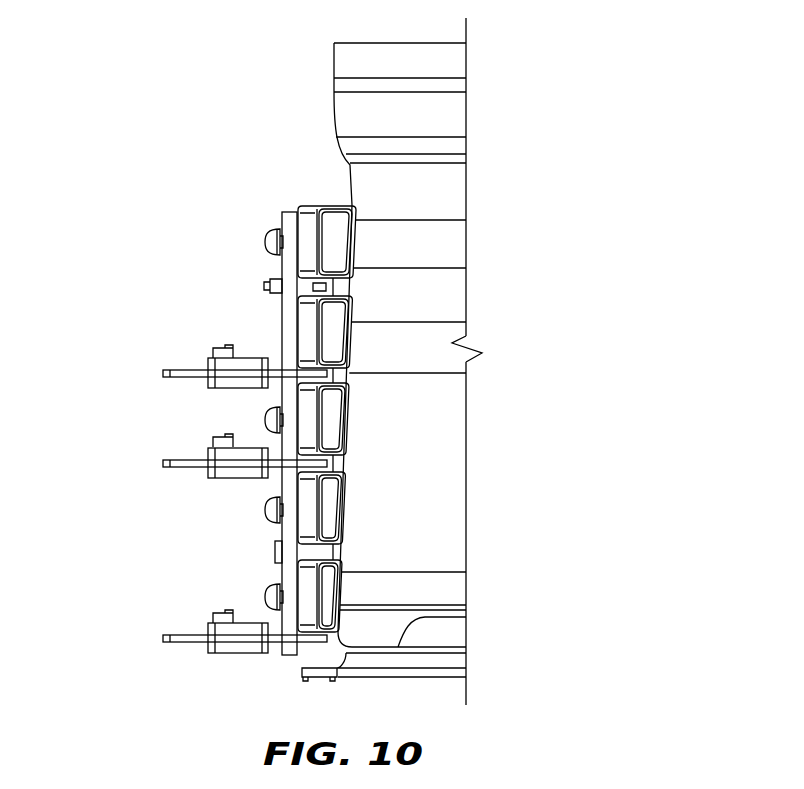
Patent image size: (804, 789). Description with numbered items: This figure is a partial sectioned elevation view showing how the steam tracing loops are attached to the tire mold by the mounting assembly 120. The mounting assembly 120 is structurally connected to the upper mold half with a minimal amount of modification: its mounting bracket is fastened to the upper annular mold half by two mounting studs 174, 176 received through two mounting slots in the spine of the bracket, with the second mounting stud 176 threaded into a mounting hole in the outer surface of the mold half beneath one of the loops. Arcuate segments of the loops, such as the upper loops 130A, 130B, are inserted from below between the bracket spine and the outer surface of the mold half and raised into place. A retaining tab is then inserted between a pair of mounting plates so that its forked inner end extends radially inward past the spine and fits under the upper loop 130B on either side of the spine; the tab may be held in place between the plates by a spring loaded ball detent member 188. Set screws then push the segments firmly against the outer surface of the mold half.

The mounting assembly 120 is at (293, 666).
The upper loop 130A is at (333, 256).
The upper loop 130B is at (340, 311).
The mounting stud 174 is at (263, 287).
The mounting stud 176 is at (276, 552).
The spring loaded ball detent member 188 is at (218, 347).